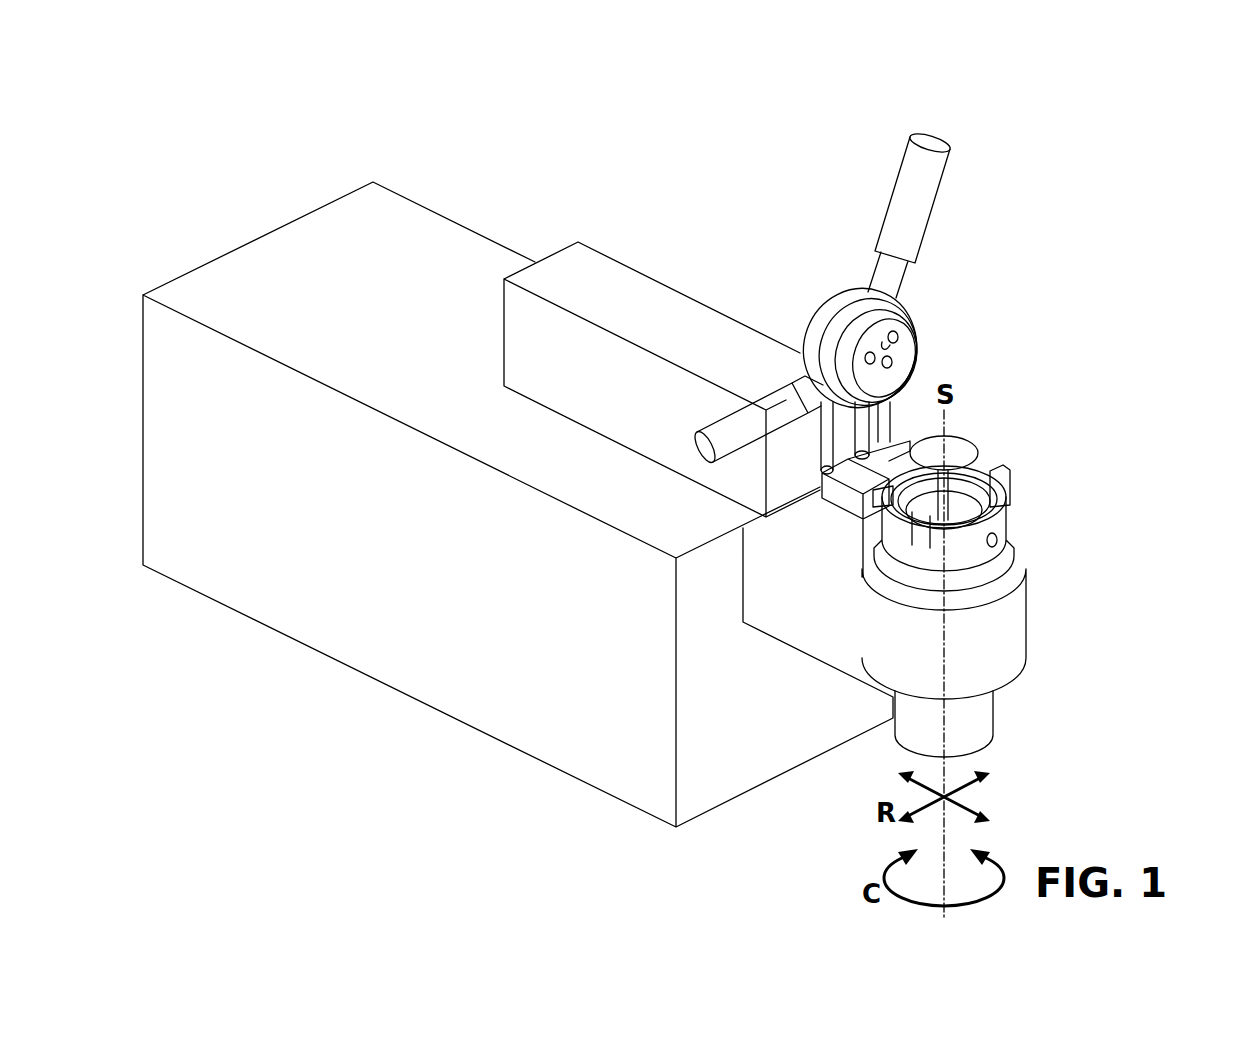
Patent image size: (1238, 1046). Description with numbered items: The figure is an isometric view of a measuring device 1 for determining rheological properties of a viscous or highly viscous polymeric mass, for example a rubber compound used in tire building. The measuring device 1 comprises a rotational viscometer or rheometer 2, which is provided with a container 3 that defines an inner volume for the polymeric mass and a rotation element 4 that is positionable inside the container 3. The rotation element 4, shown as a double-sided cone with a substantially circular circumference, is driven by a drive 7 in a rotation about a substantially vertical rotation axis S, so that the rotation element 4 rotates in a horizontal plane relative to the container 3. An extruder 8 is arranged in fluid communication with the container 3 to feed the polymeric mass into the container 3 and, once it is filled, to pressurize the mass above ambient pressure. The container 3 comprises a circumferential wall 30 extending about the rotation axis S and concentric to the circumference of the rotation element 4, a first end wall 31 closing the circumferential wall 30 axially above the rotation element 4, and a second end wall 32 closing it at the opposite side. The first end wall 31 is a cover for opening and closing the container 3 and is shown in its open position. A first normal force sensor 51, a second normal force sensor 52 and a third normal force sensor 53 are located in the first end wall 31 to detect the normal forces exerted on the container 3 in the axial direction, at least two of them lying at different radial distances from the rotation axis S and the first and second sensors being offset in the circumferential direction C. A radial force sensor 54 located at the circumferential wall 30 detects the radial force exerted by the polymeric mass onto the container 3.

The measuring device 1 is at (264, 154).
The rheometer 2 is at (784, 200).
The container 3 is at (998, 513).
The rotation element 4 is at (967, 450).
The drive 7 is at (988, 715).
The extruder 8 is at (658, 300).
The circumferential wall 30 is at (913, 503).
The first end wall 31 is at (873, 377).
The second end wall 32 is at (993, 517).
The first normal force sensor 51 is at (893, 362).
The second normal force sensor 52 is at (868, 353).
The third normal force sensor 53 is at (898, 334).
The radial force sensor 54 is at (998, 538).